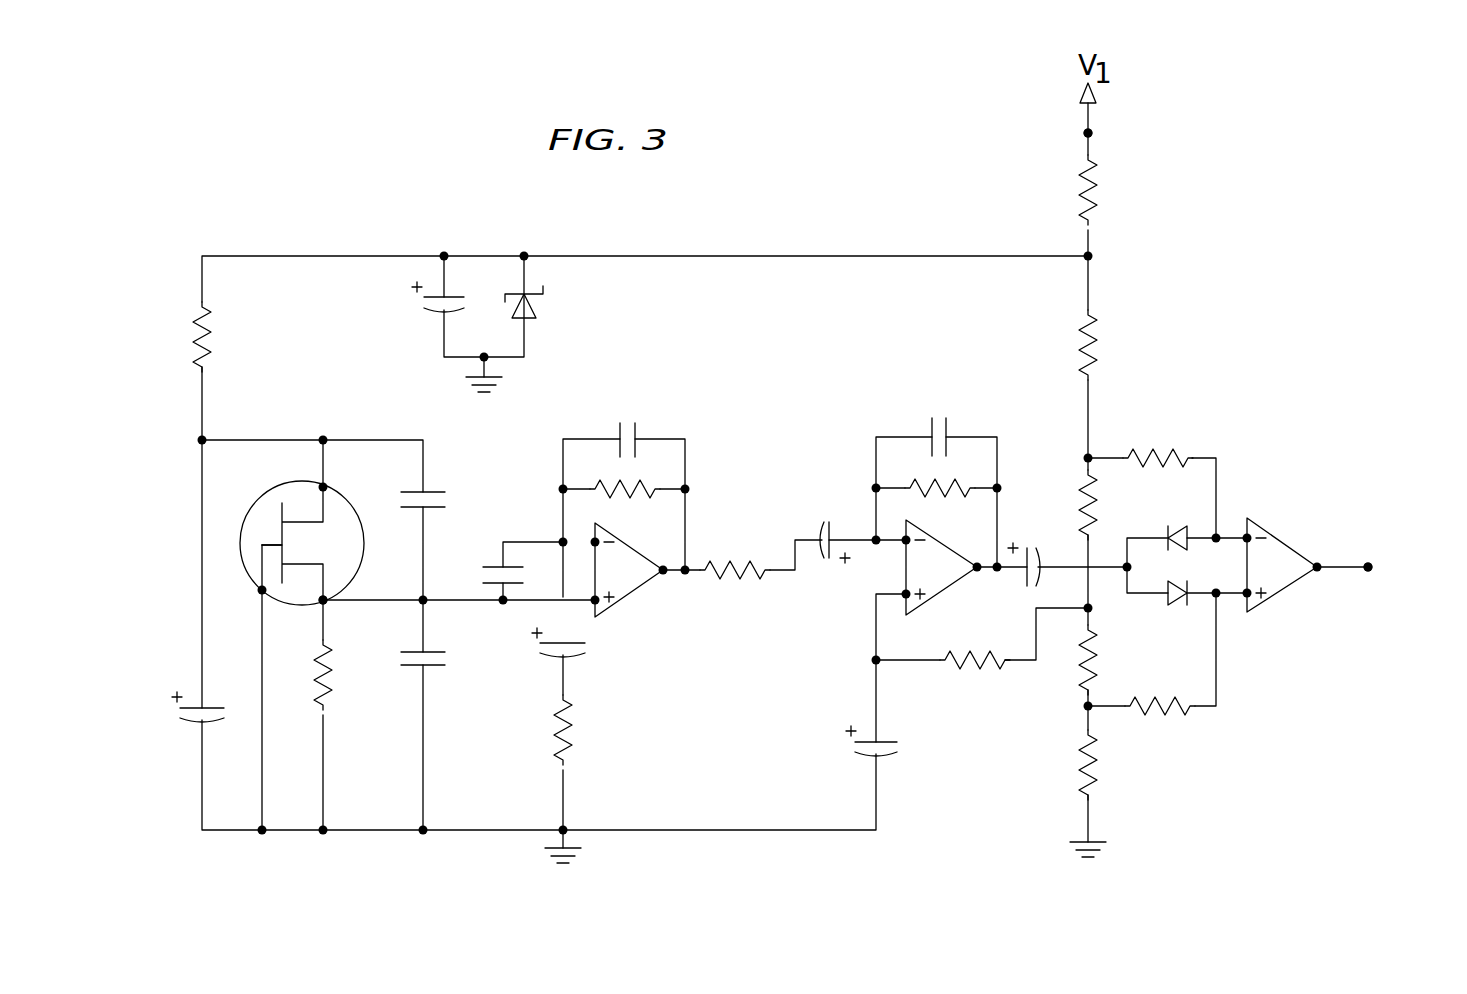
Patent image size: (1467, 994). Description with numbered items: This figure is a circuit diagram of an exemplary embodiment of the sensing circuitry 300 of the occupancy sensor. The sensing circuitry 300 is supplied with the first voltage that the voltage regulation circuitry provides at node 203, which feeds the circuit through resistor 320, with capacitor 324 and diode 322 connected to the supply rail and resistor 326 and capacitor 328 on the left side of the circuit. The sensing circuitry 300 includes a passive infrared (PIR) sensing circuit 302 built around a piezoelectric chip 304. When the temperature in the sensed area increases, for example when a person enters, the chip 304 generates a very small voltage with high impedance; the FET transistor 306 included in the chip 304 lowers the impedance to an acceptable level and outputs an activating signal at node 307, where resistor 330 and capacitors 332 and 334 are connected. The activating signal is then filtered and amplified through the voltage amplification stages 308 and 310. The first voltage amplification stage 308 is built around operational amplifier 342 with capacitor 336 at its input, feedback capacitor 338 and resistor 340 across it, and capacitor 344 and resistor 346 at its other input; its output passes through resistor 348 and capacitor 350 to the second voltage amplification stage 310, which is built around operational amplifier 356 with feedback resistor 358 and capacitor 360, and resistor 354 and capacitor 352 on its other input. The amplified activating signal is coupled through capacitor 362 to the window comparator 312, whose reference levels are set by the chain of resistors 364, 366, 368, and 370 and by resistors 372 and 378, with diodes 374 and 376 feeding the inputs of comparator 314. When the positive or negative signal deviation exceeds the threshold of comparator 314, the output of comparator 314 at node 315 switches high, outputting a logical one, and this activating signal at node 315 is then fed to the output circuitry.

The node 203 is at (1092, 133).
The sensing circuitry 300 is at (1233, 134).
The passive infrared (PIR) sensing circuit 302 is at (348, 412).
The piezoelectric chip 304 is at (300, 490).
The FET transistor 306 is at (275, 580).
The node 307 is at (327, 605).
The voltage amplification stage 308 is at (635, 362).
The voltage amplification stage 310 is at (893, 345).
The window comparator 312 is at (1200, 400).
The comparator 314 is at (1280, 600).
The node 315 is at (1372, 566).
The resistor 320 is at (1096, 190).
The diode 322 is at (546, 302).
The capacitor 324 is at (432, 310).
The resistor 326 is at (195, 328).
The capacitor 328 is at (200, 726).
The resistor 330 is at (330, 692).
The capacitor 332 is at (427, 668).
The capacitor 334 is at (420, 498).
The capacitor 336 is at (500, 562).
The capacitor 338 is at (632, 432).
The resistor 340 is at (607, 496).
The operational amplifier 342 is at (613, 604).
The capacitor 344 is at (582, 656).
The resistor 346 is at (575, 735).
The resistor 348 is at (745, 583).
The capacitor 350 is at (822, 528).
The capacitor 352 is at (868, 754).
The resistor 354 is at (976, 680).
The operational amplifier 356 is at (930, 602).
The resistor 358 is at (932, 498).
The capacitor 360 is at (932, 425).
The capacitor 362 is at (1042, 560).
The resistor 364 is at (1097, 348).
The resistor 366 is at (1078, 488).
The resistor 368 is at (1072, 665).
The resistor 370 is at (1080, 760).
The resistor 372 is at (1150, 722).
The diode 374 is at (1170, 606).
The diode 376 is at (1176, 522).
The resistor 378 is at (1158, 452).